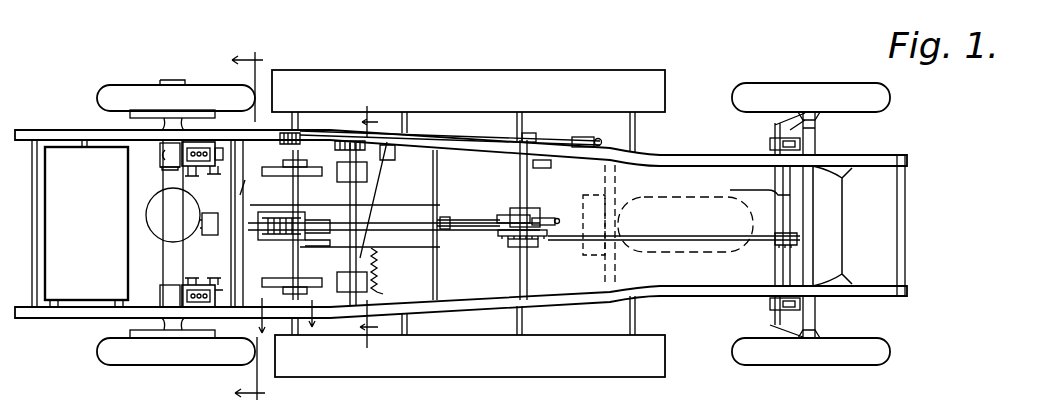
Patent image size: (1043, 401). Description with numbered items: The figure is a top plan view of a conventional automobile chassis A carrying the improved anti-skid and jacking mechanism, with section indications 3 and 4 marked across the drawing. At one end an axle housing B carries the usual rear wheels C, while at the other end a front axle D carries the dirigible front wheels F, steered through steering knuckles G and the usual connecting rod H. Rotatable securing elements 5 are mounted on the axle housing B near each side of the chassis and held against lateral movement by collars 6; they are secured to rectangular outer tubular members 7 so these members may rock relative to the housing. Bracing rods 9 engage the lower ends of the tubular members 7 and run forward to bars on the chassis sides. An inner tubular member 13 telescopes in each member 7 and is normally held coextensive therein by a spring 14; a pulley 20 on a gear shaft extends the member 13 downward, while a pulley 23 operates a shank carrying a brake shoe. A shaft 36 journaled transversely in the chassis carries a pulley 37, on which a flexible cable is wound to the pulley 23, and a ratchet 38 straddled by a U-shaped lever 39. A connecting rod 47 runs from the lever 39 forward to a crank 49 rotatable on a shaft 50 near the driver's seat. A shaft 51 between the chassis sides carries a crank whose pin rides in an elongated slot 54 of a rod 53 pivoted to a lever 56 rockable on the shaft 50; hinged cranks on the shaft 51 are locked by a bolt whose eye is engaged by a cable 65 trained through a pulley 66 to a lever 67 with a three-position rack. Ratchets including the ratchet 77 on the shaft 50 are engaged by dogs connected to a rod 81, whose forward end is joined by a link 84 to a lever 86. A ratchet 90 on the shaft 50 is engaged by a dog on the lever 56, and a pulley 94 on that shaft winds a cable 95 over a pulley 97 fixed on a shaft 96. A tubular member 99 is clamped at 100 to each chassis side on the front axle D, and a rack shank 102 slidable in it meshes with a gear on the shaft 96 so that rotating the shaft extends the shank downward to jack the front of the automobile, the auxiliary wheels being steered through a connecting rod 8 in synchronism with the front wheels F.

The chassis frame cross members 3 is at (222, 250).
The section line 4- 4 is at (248, 216).
The rotatable securing element 5 is at (160, 155).
The collar 6 is at (160, 167).
The outer tubular member 7 is at (196, 140).
The connecting rod 8 is at (160, 297).
The bracing rod 9 is at (553, 272).
The inner tubular member 13 is at (295, 327).
The spring 14 is at (271, 134).
The pulley 20 is at (219, 170).
The pulley 23 is at (199, 170).
The shaft 36 is at (298, 257).
The pulley 37 is at (268, 175).
The ratchet 38 is at (308, 215).
The U-shaped lever 39 is at (258, 242).
The connecting rod 47 is at (468, 208).
The crank 49 is at (512, 208).
The shaft 50 is at (526, 196).
The shaft 51 is at (350, 258).
The rod 53 is at (448, 230).
The elongated slot 54 is at (385, 285).
The lever 56 is at (600, 198).
The cable 65 is at (390, 190).
The pulley 66 is at (392, 160).
The lever 67 is at (552, 166).
The ratchet 77 is at (532, 134).
The rod 81 is at (490, 138).
The link 84 is at (566, 136).
The lever 86 is at (600, 137).
The ratchet 90 is at (556, 242).
The pulley 94 is at (508, 240).
The cable 95 is at (557, 208).
The shaft 96 is at (746, 186).
The pulley 97 is at (780, 232).
The tubular member 99 is at (776, 128).
The clamp 100 is at (812, 147).
The rack shank 102 is at (800, 141).
The automobile chassis A is at (689, 122).
The axle housing B is at (168, 193).
The rear wheels C is at (98, 97).
The front axle D is at (813, 222).
The dirigible front wheels F is at (853, 100).
The steering knuckles G is at (790, 97).
The connecting rod H is at (776, 266).